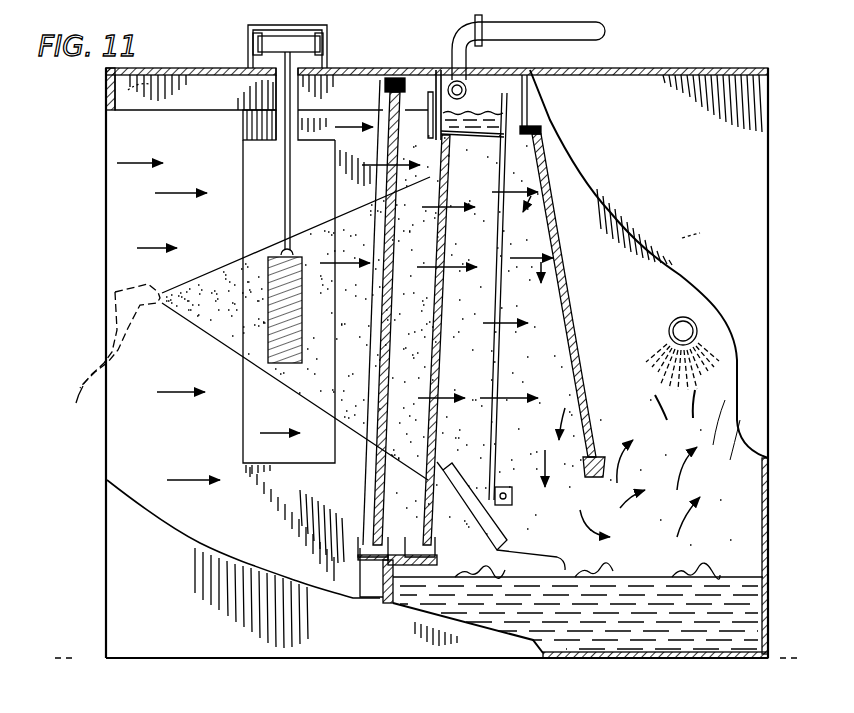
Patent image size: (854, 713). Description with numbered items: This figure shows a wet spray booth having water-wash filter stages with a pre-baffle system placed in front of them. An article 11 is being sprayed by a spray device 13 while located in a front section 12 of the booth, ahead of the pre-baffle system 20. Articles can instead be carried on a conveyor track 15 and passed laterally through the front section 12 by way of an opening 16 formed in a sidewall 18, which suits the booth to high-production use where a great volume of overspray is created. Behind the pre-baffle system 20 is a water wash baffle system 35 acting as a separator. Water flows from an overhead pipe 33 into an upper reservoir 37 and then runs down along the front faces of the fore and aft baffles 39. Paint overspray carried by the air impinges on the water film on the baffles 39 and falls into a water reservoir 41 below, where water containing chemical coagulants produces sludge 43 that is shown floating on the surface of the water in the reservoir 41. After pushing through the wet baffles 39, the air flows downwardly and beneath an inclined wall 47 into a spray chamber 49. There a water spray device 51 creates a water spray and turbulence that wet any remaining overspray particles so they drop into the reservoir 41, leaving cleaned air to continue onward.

The article 11 is at (296, 313).
The front section 12 is at (133, 128).
The spray device 13 is at (115, 297).
The conveyor track 15 is at (248, 45).
The opening 16 is at (243, 218).
The sidewall 18 is at (220, 157).
The pre-baffle system 20 is at (352, 503).
The overhead pipe 33 is at (596, 35).
The water wash baffle system 35 is at (497, 333).
The upper reservoir 37 is at (483, 107).
The baffles 39 is at (503, 247).
The water reservoir 41 is at (730, 615).
The sludge 43 is at (478, 575).
The inclined wall 47 is at (567, 278).
The spray chamber 49 is at (628, 362).
The water spray device 51 is at (690, 292).